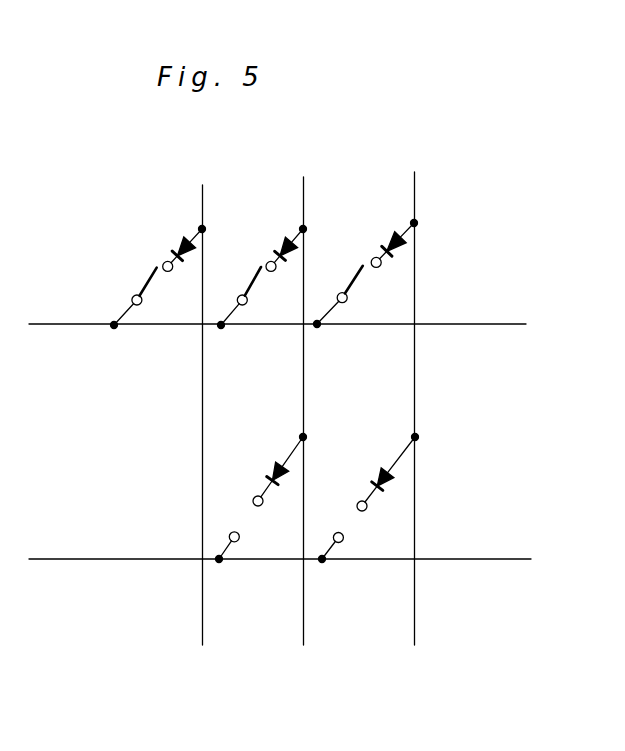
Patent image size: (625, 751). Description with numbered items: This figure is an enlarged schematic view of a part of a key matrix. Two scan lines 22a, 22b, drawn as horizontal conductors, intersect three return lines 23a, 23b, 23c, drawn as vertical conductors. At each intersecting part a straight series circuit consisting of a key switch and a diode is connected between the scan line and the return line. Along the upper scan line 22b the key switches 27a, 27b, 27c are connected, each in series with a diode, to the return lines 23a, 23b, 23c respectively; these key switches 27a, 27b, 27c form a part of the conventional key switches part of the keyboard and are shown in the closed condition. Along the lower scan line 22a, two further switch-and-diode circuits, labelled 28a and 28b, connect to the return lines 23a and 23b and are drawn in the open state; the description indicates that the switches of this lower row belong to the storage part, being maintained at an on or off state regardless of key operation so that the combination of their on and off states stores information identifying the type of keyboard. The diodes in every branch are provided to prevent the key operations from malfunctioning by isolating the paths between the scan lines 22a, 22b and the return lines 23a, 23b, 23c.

The scan line 22a is at (90, 561).
The scan line 22b is at (77, 325).
The return line 23a is at (418, 257).
The return line 23b is at (306, 250).
The return line 23c is at (206, 250).
The key switch 27a is at (357, 292).
The key switch 27b is at (262, 282).
The key switch 27c is at (155, 282).
The open switch with diode 28a is at (349, 517).
The open switch with diode 28b is at (245, 517).